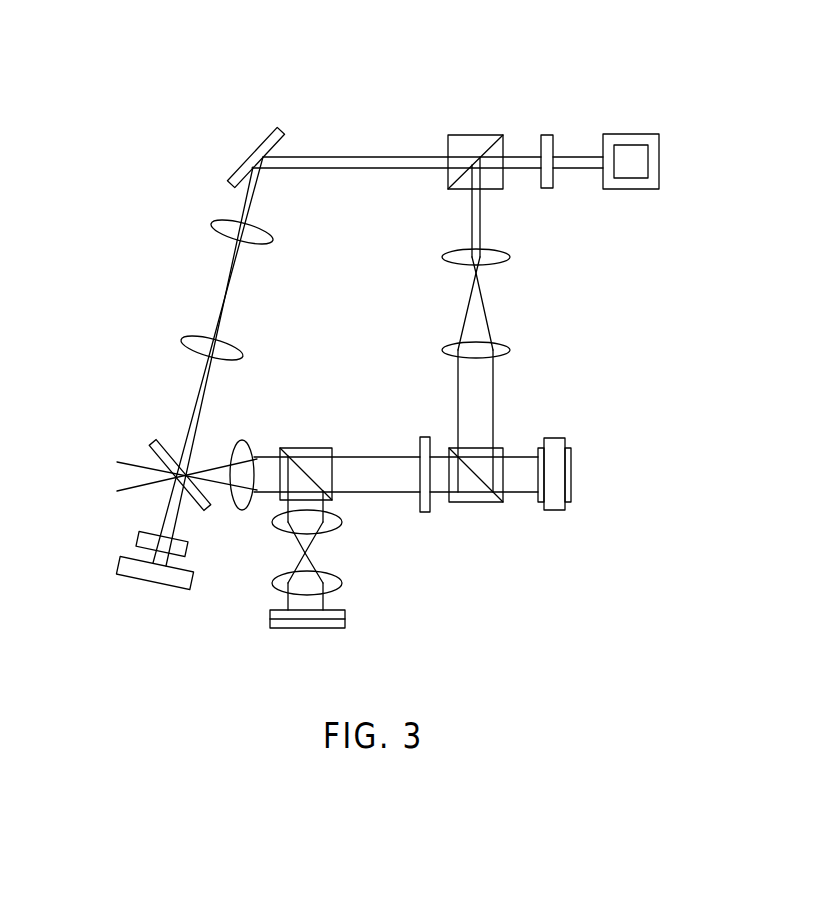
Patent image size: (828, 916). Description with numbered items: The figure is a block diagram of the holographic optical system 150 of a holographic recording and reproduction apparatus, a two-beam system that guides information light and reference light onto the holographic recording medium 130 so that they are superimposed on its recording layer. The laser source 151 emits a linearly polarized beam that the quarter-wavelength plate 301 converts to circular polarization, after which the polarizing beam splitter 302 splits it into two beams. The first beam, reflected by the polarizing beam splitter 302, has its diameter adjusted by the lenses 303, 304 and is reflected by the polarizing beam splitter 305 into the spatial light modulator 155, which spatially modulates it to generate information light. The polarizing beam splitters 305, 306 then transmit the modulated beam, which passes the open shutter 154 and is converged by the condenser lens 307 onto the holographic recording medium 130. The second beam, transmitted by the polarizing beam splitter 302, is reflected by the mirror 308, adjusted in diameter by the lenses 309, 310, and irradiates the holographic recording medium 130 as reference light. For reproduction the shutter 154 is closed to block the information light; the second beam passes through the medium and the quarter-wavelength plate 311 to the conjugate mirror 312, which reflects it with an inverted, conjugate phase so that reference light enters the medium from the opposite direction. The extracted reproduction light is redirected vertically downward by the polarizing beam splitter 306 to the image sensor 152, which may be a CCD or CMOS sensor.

The holographic optical system 150 is at (591, 66).
The laser source 151 is at (628, 134).
The quarter-wavelength plate 301 is at (547, 135).
The polarizing beam splitter 302 is at (478, 135).
The lens 303 is at (510, 257).
The lens 304 is at (510, 350).
The polarizing beam splitter 305 is at (475, 503).
The spatial light modulator 155 is at (553, 511).
The shutter 154 is at (424, 513).
The polarizing beam splitter 306 is at (302, 447).
The condenser lens 307 is at (242, 510).
The image sensor 152 is at (305, 629).
The mirror 308 is at (254, 148).
The lens 309 is at (211, 228).
The lens 310 is at (181, 345).
The holographic recording medium 130 is at (151, 446).
The quarter-wavelength plate 311 is at (138, 540).
The conjugate mirror 312 is at (120, 566).